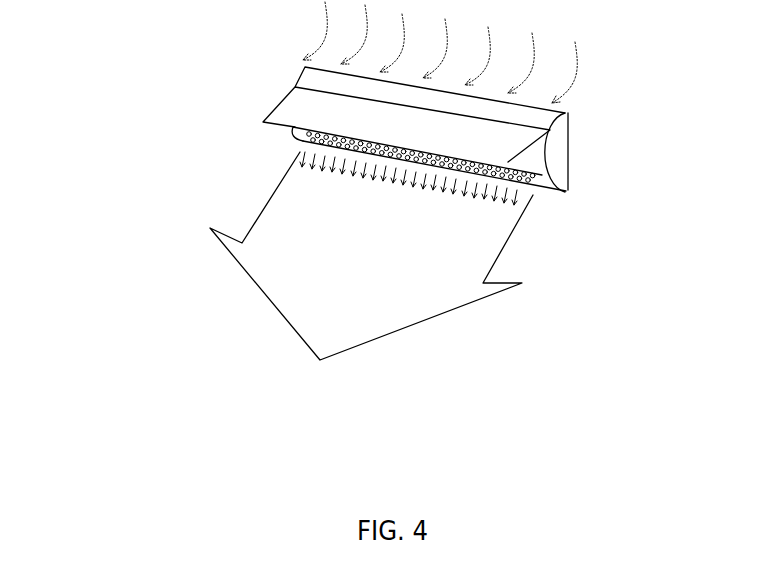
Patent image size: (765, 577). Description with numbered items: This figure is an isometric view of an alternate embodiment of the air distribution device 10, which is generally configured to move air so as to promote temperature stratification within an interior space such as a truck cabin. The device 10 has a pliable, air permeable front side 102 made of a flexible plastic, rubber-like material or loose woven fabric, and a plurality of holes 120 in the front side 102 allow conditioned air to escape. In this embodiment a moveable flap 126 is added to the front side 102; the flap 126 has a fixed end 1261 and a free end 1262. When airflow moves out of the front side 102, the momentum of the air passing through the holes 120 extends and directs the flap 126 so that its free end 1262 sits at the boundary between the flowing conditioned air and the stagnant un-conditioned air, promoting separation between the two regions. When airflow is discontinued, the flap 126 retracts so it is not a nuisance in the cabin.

The device 10 is at (95, 50).
The front side 102 is at (304, 80).
The holes 120 is at (568, 182).
The moveable flap 126 is at (285, 117).
The fixed end 1261 is at (568, 143).
The free end 1262 is at (277, 124).